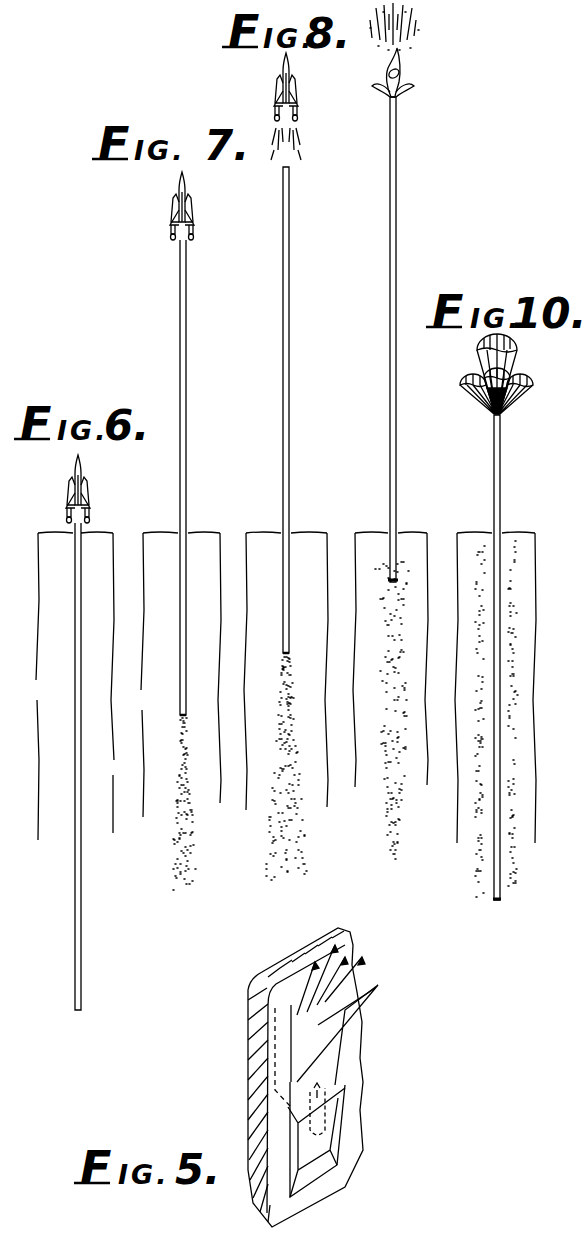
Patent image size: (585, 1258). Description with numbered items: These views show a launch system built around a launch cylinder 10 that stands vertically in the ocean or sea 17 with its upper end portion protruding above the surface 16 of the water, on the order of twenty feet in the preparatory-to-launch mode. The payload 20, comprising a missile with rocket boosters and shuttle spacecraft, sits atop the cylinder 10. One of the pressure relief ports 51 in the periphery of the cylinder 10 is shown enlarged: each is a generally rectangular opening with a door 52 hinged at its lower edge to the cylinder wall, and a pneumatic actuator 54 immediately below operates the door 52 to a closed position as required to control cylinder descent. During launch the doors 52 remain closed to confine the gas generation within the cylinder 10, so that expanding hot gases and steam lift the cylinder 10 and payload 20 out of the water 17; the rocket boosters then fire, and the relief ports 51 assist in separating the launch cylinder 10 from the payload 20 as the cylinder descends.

In FIG. 6, the launch cylinder 10 is at (75, 755).
In FIG. 7, the launch cylinder 10 is at (187, 372).
In FIG. 8, the launch cylinder 10 is at (290, 400).
In FIG. 9, the launch cylinder 10 is at (397, 198).
In FIG. 10, the launch cylinder 10 is at (494, 872).
In FIG. 5, the launch cylinder 10 is at (357, 1154).
In FIG. 6, the surface 16 is at (45, 533).
In FIG. 7, the surface 16 is at (168, 533).
In FIG. 8, the surface 16 is at (269, 533).
In FIG. 9, the surface 16 is at (379, 533).
In FIG. 10, the surface 16 is at (480, 533).
In FIG. 6, the ocean or sea 17 is at (96, 545).
In FIG. 7, the ocean or sea 17 is at (194, 545).
In FIG. 8, the ocean or sea 17 is at (299, 545).
In FIG. 9, the ocean or sea 17 is at (410, 545).
In FIG. 10, the ocean or sea 17 is at (513, 545).
In FIG. 6, the payload 20 is at (84, 489).
In FIG. 7, the payload 20 is at (190, 208).
In FIG. 8, the payload 20 is at (292, 90).
In FIG. 5, the pressure relief ports 51 is at (292, 1009).
In FIG. 5, the door 52 is at (358, 1013).
In FIG. 5, the pneumatic actuators 54 is at (338, 1118).